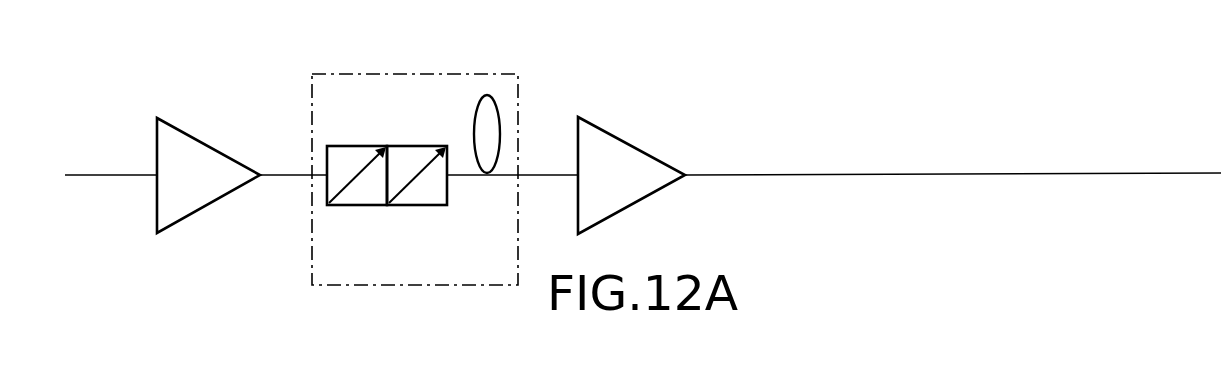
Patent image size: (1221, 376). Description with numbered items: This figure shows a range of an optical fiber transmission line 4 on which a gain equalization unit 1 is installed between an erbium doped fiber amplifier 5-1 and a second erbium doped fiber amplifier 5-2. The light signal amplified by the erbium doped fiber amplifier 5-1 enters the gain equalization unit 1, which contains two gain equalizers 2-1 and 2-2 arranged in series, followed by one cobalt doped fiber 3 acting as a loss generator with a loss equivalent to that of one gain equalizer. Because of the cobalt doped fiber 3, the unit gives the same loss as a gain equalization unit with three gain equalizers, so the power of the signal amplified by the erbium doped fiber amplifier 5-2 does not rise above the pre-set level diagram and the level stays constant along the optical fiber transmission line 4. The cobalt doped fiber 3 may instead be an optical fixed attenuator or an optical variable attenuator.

The gain equalization unit 1 is at (485, 74).
The gain equalizer 2-1 is at (340, 206).
The gain equalizer 2-2 is at (415, 206).
The cobalt doped fiber 3 is at (473, 121).
The optical fiber transmission line 4 is at (760, 175).
The erbium doped fiber amplifier 5-1 is at (193, 135).
The erbium doped fiber amplifier 5-2 is at (637, 148).